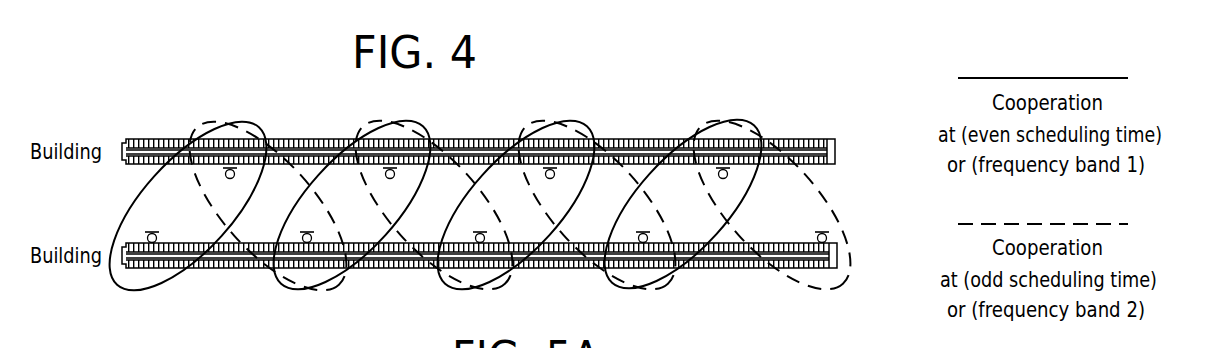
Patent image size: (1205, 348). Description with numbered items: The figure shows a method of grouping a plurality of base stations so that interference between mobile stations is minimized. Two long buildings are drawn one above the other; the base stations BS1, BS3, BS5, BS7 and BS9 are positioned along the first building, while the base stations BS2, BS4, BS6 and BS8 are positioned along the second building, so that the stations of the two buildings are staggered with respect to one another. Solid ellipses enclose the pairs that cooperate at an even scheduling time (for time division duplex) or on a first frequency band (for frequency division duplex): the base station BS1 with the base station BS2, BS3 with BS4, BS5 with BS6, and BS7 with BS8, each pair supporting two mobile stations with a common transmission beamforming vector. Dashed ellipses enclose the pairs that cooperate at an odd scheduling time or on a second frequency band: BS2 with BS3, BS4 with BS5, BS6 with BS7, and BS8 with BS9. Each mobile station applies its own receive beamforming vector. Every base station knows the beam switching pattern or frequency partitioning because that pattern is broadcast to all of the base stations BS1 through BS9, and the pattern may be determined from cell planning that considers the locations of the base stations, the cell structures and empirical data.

The base station BS1 is at (186, 271).
The base station BS2 is at (264, 139).
The base station BS3 is at (348, 271).
The base station BS4 is at (428, 139).
The base station BS5 is at (518, 271).
The base station BS6 is at (586, 139).
The base station BS7 is at (682, 271).
The base station BS8 is at (761, 139).
The base station BS9 is at (857, 272).